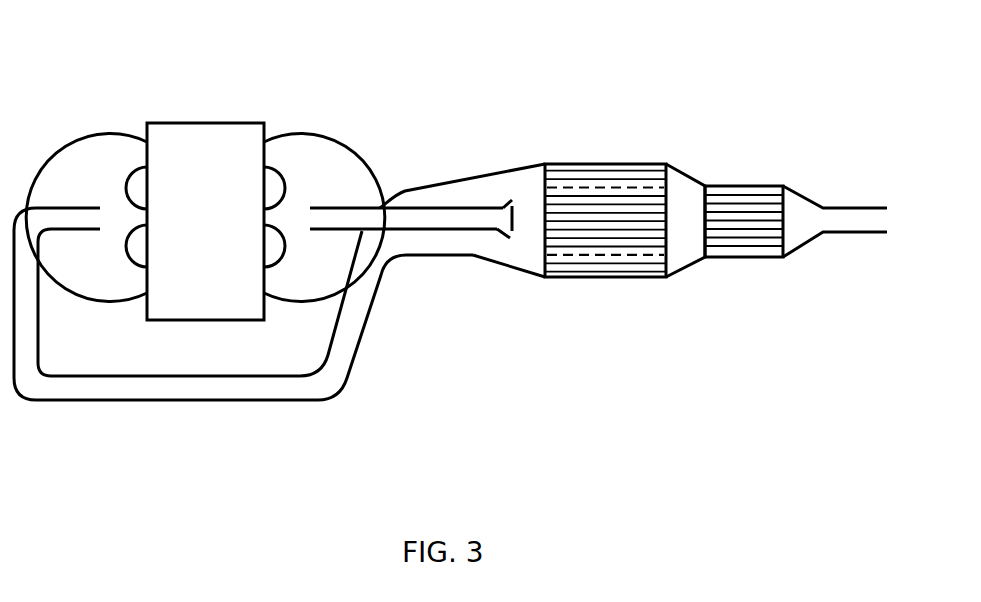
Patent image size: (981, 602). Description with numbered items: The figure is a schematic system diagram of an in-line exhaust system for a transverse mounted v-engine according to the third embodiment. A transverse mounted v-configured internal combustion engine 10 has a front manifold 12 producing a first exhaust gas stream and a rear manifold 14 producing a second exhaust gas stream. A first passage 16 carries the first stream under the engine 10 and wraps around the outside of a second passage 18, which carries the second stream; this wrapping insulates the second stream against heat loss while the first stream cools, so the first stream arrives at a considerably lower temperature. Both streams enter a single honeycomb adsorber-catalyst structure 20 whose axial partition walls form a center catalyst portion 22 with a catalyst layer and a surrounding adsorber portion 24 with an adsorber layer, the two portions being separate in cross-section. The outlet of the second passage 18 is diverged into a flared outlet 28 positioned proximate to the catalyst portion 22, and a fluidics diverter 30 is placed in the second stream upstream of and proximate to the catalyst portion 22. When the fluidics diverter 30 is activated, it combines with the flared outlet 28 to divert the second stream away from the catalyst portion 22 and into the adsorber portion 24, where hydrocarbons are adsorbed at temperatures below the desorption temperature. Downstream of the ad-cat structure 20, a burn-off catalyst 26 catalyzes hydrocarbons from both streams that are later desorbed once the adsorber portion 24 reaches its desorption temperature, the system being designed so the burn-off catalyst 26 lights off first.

The internal combustion engine 10 is at (197, 142).
The front manifold 12 is at (118, 187).
The rear manifold 14 is at (282, 170).
The first passage 16 is at (30, 380).
The second passage 18 is at (337, 217).
The adsorber-catalyst structure 20 is at (637, 164).
The catalyst portion 22 is at (597, 223).
The adsorber portion 24 is at (560, 175).
The burn-off catalyst 26 is at (748, 197).
The flared outlet 28 is at (508, 238).
The fluidics diverter 30 is at (508, 205).